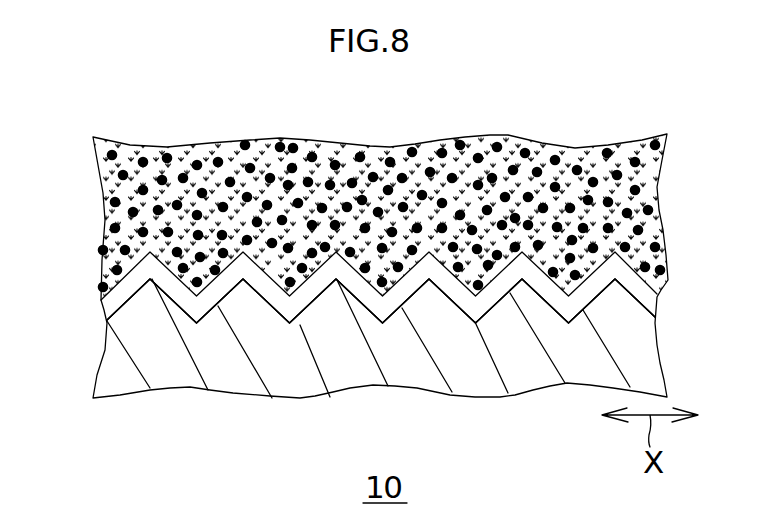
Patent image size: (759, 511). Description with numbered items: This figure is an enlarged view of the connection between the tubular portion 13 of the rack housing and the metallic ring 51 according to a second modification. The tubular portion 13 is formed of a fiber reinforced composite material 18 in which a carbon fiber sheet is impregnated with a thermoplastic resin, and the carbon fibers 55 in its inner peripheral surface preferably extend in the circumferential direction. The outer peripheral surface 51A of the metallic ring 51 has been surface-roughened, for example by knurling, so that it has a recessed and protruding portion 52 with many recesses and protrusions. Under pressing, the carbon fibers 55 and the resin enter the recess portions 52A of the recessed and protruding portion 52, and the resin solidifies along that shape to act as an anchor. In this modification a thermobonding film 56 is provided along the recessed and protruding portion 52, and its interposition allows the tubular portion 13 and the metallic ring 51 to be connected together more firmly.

The tubular portion 13 is at (86, 214).
The fiber reinforced composite material 18 is at (670, 198).
The carbon fibers 55 is at (311, 152).
The thermobonding film 56 is at (670, 283).
The metallic ring 51 is at (643, 360).
The outer peripheral surface 51A is at (300, 325).
The recess portions 52A is at (568, 320).
The recessed and protruding portion 52 is at (381, 379).